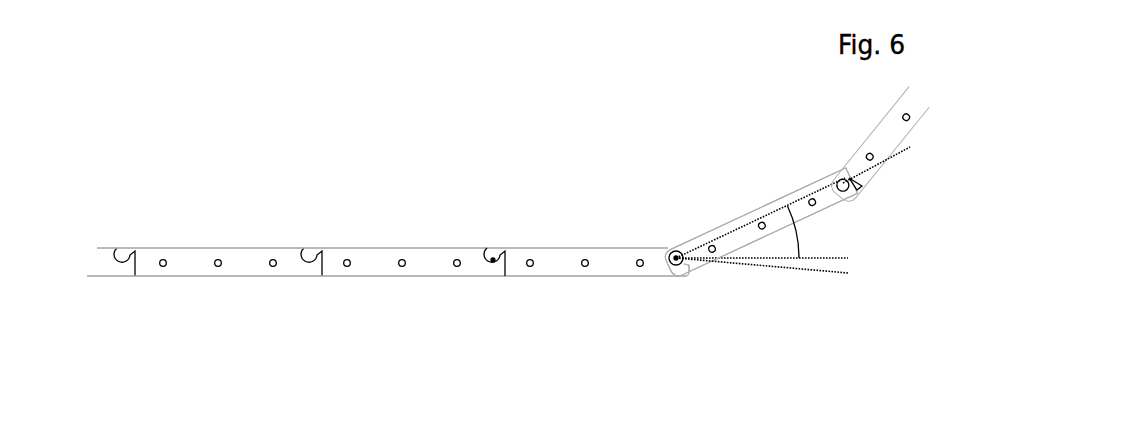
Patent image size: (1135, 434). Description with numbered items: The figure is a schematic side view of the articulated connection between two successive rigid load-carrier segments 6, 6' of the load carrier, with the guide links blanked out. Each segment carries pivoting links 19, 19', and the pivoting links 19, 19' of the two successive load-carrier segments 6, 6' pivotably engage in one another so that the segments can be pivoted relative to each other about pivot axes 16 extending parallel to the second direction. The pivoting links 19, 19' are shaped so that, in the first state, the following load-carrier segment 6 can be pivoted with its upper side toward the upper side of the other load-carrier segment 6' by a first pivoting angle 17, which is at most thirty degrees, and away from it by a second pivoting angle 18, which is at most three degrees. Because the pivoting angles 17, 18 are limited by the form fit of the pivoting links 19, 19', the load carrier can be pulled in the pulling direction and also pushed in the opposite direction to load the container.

The pivot axis 16 is at (597, 275).
The pivoting link 19' is at (467, 202).
The load-carrier segment 6' is at (388, 216).
The pivoting link 19 is at (760, 192).
The load-carrier segment 6 is at (760, 207).
The first pivoting angle 17 is at (831, 232).
The second pivoting angle 18 is at (762, 296).